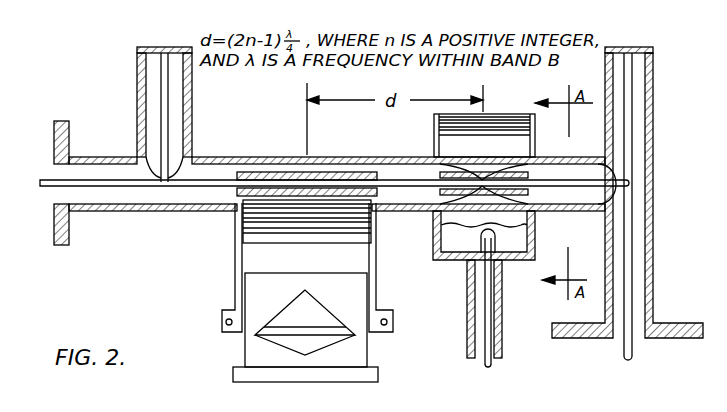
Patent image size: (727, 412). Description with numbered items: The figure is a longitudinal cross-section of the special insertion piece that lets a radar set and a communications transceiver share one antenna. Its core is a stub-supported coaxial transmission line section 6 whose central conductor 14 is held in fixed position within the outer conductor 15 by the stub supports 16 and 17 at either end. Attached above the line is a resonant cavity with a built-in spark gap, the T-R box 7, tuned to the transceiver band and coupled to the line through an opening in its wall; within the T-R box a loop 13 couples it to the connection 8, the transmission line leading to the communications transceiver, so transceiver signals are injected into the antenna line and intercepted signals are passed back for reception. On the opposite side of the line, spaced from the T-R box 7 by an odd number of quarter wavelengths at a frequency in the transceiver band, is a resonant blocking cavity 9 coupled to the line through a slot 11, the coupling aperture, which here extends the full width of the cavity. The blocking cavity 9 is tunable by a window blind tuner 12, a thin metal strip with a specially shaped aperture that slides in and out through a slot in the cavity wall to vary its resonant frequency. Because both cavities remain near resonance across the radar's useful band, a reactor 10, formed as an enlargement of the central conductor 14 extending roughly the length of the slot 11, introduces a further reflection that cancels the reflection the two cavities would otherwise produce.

The stub-supported coaxial transmission line section 6 is at (210, 157).
The T-R box 7 is at (433, 148).
The connection to the communications transceiver 8 is at (467, 290).
The resonant blocking cavity 9 is at (235, 272).
The reactor 10 is at (273, 157).
The slot (coupling aperture) 11 is at (334, 203).
The window blind tuner 12 is at (367, 345).
The loop 13 is at (482, 238).
The central conductor 14 is at (52, 178).
The outer conductor 15 is at (106, 205).
The stub support 16 is at (137, 93).
The stub support 17 is at (655, 96).